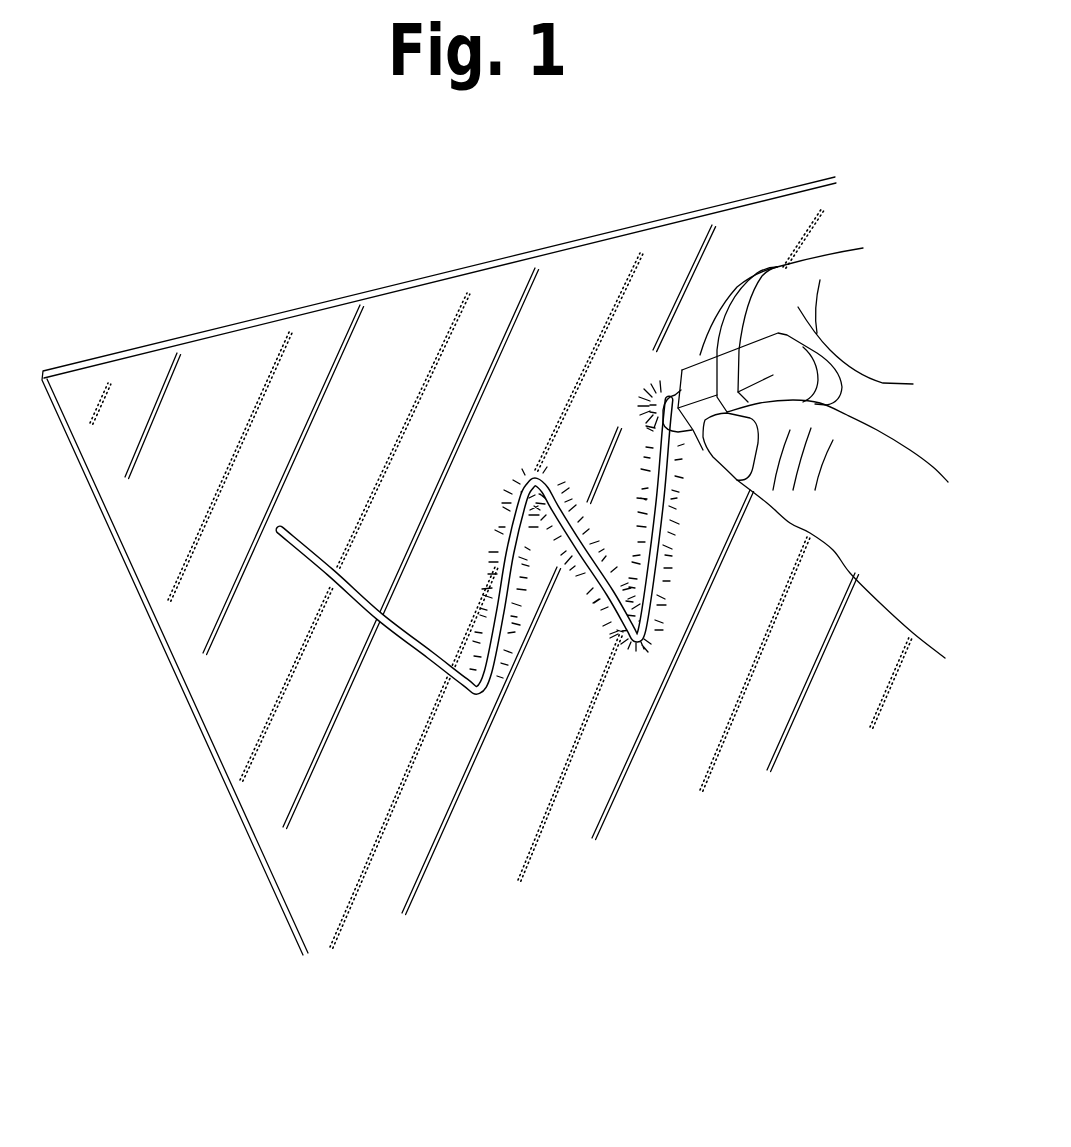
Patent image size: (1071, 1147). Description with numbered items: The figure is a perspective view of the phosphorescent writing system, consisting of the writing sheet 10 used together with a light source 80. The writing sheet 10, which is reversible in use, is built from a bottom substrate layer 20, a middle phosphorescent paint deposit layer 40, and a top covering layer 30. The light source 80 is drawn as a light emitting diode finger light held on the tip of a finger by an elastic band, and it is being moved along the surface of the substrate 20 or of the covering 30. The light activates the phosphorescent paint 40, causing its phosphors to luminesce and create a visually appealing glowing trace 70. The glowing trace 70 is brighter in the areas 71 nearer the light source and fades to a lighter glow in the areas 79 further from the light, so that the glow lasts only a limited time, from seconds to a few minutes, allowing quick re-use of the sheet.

The writing sheet 10 is at (375, 260).
The bottom substrate layer 20 is at (99, 506).
The top covering layer 30 is at (84, 358).
The middle phosphorescent paint deposit layer 40 is at (253, 638).
The glowing trace 70 is at (633, 672).
The brighter areas of the glowing trace 71 is at (663, 425).
The fading areas of the glowing trace 79 is at (380, 618).
The light source 80 is at (765, 473).